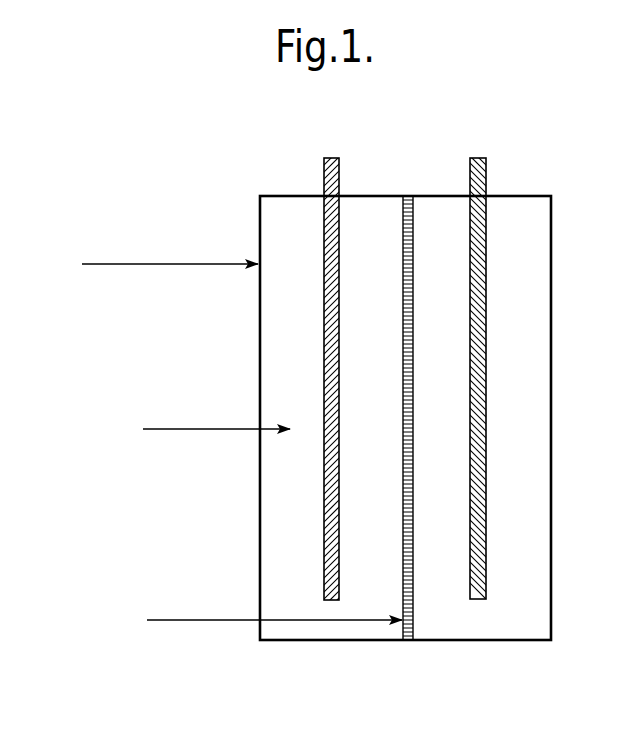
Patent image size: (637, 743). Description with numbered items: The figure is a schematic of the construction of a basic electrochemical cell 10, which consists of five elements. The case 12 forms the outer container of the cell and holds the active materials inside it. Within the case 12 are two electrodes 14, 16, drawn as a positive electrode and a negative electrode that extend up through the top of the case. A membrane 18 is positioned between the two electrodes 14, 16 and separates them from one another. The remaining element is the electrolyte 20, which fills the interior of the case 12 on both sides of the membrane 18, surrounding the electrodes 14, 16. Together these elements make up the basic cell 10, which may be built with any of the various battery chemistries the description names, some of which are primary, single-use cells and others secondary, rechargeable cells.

The electrochemical cell 10 is at (243, 664).
The case 12 is at (566, 558).
The electrode 14 is at (324, 531).
The electrode 16 is at (486, 583).
The membrane 18 is at (414, 617).
The electrolyte 20 is at (370, 336).